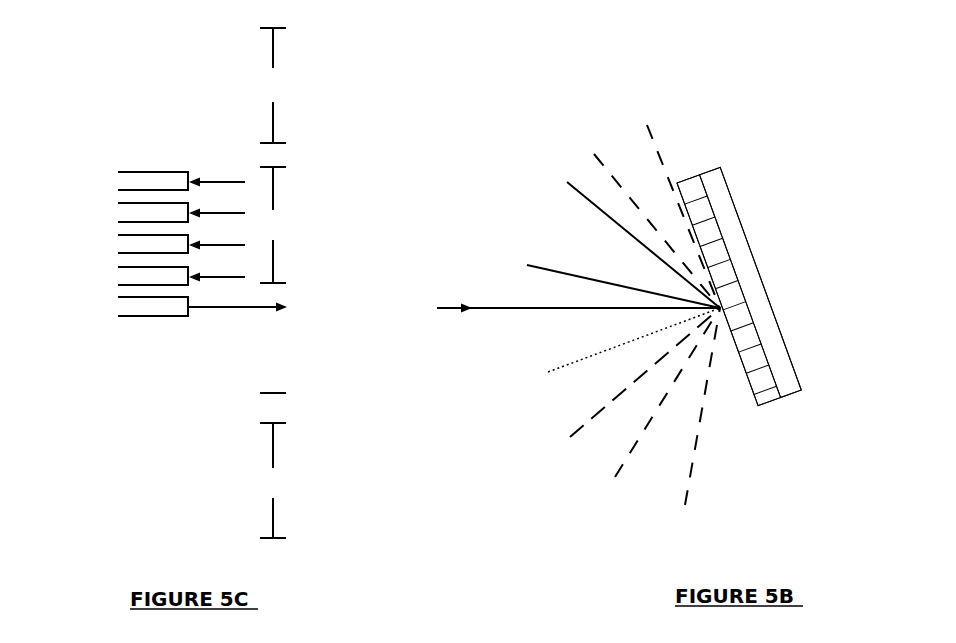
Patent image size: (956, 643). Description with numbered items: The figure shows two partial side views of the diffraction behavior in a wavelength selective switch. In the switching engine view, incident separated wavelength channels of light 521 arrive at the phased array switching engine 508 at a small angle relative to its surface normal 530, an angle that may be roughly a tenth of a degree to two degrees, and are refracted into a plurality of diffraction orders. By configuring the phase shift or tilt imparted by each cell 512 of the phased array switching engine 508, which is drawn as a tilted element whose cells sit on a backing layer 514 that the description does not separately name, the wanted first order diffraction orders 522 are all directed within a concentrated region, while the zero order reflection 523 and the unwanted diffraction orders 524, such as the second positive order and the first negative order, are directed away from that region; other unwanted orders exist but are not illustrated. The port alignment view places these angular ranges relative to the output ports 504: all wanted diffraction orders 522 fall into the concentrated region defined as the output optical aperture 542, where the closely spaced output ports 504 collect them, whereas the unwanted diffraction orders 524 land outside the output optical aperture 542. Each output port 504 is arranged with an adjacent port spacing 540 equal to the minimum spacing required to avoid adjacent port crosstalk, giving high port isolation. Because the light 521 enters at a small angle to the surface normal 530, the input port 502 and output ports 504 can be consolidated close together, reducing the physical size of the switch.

In FIG. 5C, the input port 502 is at (127, 318).
In FIG. 5C, the output ports 504 is at (128, 158).
In FIG. 5C, the adjacent port spacing 540 is at (100, 229).
In FIG. 5C, the wanted diffraction orders 522 is at (280, 182).
In FIG. 5B, the wanted diffraction orders 522 is at (568, 200).
In FIG. 5C, the output optical aperture 542 is at (275, 265).
In FIG. 5C, the zero order reflection 523 is at (278, 390).
In FIG. 5B, the zero order reflection 523 is at (570, 432).
In FIG. 5C, the unwanted diffraction orders 524 is at (280, 52).
In FIG. 5B, the unwanted diffraction orders 524 is at (645, 141).
In FIG. 5B, the light 521 is at (456, 300).
In FIG. 5B, the surface normal 530 is at (582, 353).
In FIG. 5B, the phased array switching engine 508 is at (771, 304).
In FIG. 5B, the cell 512 is at (729, 290).
In FIG. 5B, the grating substrate 514 is at (751, 282).